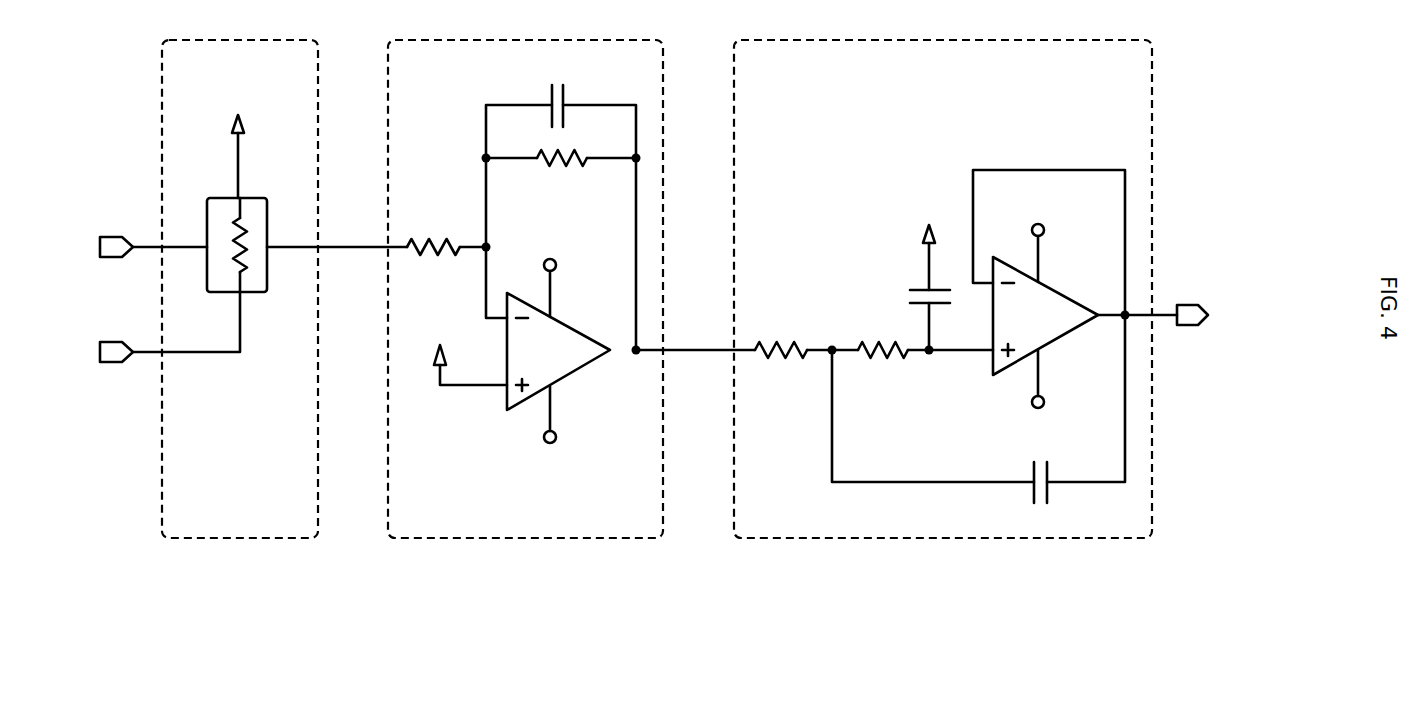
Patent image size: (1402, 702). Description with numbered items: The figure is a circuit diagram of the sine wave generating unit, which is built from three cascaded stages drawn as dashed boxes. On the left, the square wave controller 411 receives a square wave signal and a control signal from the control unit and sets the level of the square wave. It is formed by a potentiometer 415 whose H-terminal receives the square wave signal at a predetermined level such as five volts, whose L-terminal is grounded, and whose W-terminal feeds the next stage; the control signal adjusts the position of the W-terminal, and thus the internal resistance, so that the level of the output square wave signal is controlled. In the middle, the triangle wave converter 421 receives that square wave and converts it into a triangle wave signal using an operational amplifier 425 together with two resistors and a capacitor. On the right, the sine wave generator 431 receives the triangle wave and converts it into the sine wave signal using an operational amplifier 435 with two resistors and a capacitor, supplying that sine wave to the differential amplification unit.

The square wave controller 411 is at (238, 538).
The potentiometer 415 is at (207, 290).
The triangle wave converter 421 is at (527, 538).
The operational amplifier 425 is at (520, 400).
The sine wave generator 431 is at (935, 538).
The operational amplifier 435 is at (1005, 372).